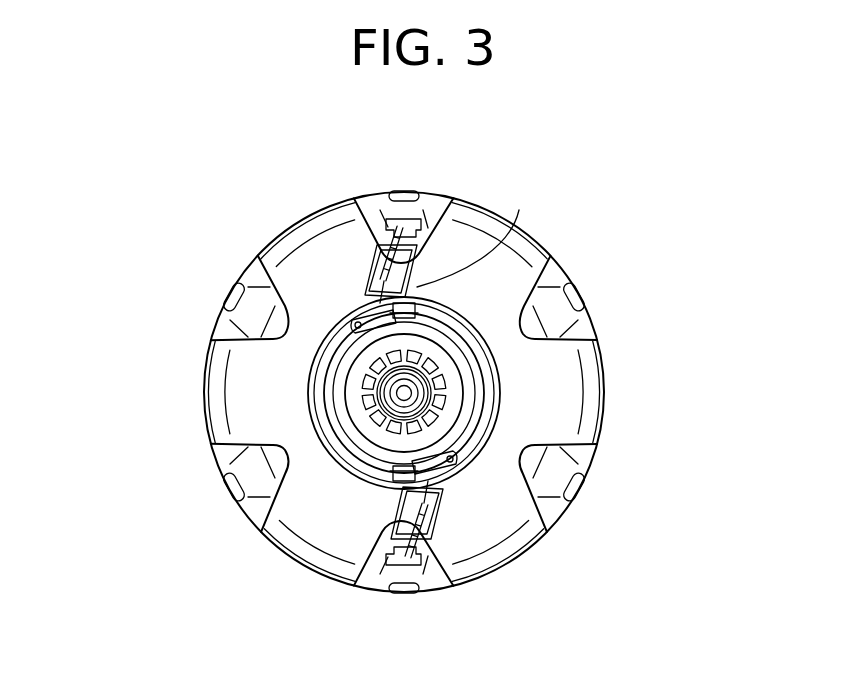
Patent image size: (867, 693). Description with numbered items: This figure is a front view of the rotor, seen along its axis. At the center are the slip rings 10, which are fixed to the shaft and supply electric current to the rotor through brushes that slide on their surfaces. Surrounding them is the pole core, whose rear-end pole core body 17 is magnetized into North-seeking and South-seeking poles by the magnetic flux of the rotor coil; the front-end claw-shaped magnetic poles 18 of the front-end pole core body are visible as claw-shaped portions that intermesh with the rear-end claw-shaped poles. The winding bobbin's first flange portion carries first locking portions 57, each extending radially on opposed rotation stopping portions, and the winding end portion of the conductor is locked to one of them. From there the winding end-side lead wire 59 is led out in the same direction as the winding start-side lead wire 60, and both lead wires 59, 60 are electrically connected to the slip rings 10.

The slip rings 10 is at (334, 372).
The rear-end pole core body 17 is at (525, 392).
The front-end claw-shaped magnetic poles 18 is at (238, 295).
The first locking portions 57 is at (405, 220).
The winding end-side lead wire 59 is at (480, 267).
The winding start-side lead wire 60 is at (427, 507).